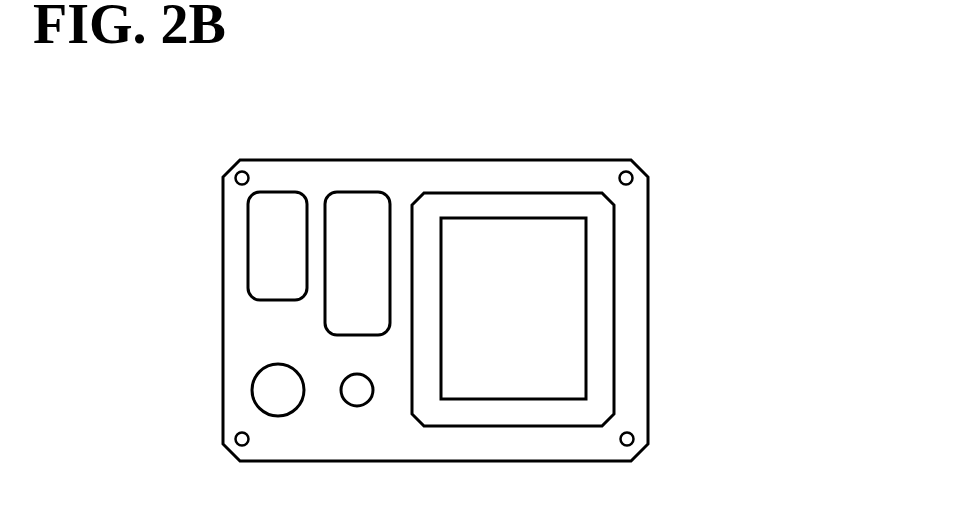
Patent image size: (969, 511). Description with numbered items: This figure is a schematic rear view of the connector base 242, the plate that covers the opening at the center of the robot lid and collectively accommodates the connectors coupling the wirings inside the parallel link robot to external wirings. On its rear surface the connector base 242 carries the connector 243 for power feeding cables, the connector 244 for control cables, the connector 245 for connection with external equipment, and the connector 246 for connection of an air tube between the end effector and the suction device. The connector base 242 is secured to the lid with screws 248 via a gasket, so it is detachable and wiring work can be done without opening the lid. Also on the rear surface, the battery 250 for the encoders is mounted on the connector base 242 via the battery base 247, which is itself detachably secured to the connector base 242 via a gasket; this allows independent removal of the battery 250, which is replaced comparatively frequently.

The connector base 242 is at (512, 158).
The connector for power feeding cables 243 is at (355, 190).
The connector for control cables 244 is at (277, 190).
The connector for connection with external equipment 245 is at (278, 416).
The connector for air tube connection 246 is at (357, 406).
The battery base 247 is at (598, 246).
The screws 248 is at (632, 172).
The battery for the encoders 250 is at (558, 325).